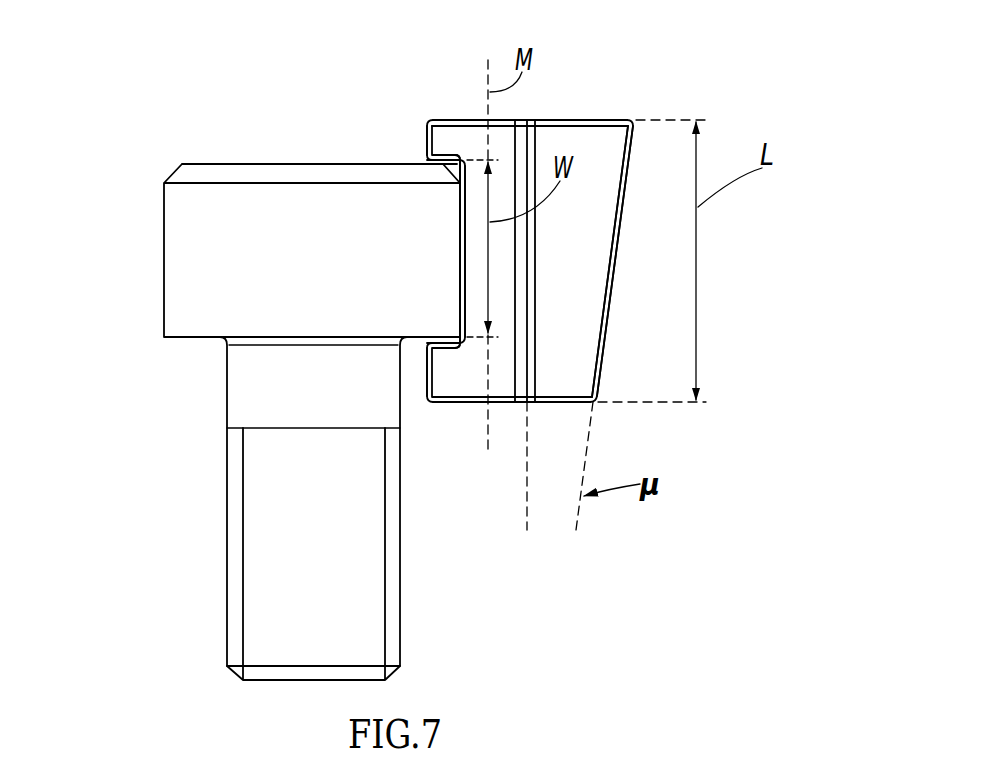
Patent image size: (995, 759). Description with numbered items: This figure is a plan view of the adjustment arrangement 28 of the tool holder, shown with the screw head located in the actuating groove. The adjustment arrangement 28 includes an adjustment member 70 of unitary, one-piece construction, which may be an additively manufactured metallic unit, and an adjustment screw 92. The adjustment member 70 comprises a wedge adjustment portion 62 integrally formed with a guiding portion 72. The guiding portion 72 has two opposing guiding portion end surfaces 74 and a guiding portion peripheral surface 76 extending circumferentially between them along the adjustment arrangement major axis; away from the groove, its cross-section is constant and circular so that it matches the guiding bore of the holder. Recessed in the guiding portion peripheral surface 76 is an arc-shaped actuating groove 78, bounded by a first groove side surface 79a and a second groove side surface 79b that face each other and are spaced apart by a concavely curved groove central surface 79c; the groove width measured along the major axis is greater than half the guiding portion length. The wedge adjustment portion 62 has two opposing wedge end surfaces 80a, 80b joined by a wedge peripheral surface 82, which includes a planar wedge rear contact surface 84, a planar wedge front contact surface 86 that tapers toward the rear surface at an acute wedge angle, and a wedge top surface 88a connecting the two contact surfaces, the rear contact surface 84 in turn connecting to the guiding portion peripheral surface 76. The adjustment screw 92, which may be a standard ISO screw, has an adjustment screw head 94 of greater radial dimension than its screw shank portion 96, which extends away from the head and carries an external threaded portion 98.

The adjustment arrangement 28 is at (104, 178).
The adjustment screw 92 is at (239, 149).
The adjustment screw head 94 is at (142, 270).
The screw shank portion 96 is at (172, 452).
The external threaded portion 98 is at (175, 542).
The adjustment member 70 is at (669, 89).
The wedge adjustment portion 62 is at (591, 86).
The guiding portion 72 is at (443, 112).
The guiding portion end surfaces 74 is at (470, 118).
The guiding portion peripheral surface 76 is at (424, 403).
The actuating groove 78 is at (452, 243).
The first groove side surface 79a is at (447, 336).
The second groove side surface 79b is at (444, 168).
The groove central surface 79c is at (459, 278).
The wedge end surface 80a is at (604, 118).
The wedge end surface 80b is at (566, 403).
The wedge peripheral surface 82 is at (565, 375).
The wedge rear contact surface 84 is at (525, 494).
The wedge front contact surface 86 is at (612, 297).
The wedge top surface 88a is at (583, 235).